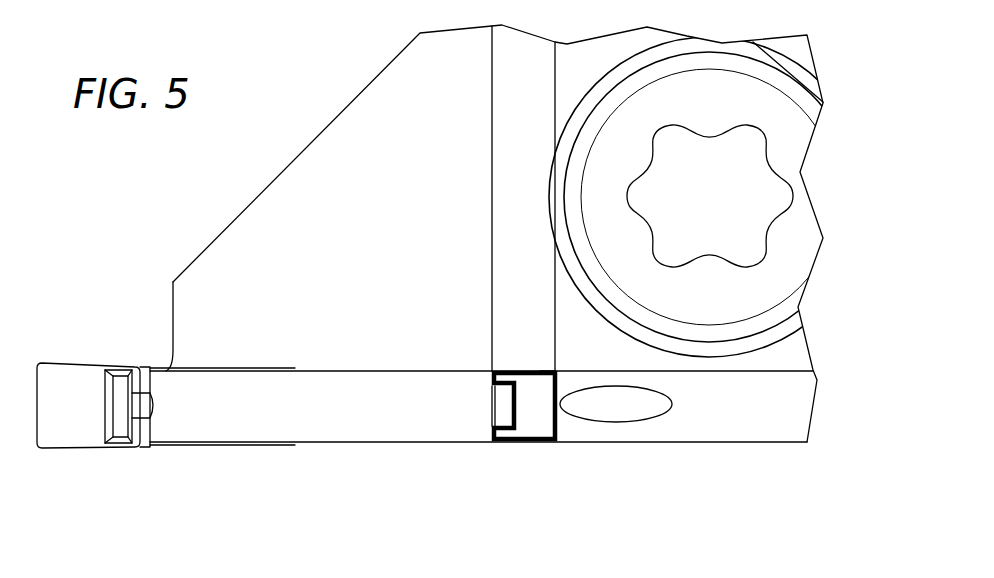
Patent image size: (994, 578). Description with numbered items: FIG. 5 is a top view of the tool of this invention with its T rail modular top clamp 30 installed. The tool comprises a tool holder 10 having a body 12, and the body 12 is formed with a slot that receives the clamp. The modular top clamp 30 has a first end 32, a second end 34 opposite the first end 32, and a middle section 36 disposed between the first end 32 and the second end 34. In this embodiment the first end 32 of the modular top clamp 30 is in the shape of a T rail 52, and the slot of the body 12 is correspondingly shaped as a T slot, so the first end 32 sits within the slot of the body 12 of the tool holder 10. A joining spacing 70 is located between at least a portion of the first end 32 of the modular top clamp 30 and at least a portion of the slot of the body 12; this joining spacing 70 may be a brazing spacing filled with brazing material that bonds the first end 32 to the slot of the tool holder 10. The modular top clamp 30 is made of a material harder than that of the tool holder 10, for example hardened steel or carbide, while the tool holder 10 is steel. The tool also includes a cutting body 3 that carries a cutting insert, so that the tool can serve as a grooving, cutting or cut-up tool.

The tool holder 10 is at (824, 401).
The body 12 is at (736, 460).
The cutting body 3 is at (60, 459).
The modular top clamp 30 is at (333, 347).
The first end 32 is at (539, 362).
The second end 34 is at (156, 457).
The middle section 36 is at (311, 453).
The T rail 52 is at (527, 401).
The joining spacing 70 is at (530, 369).